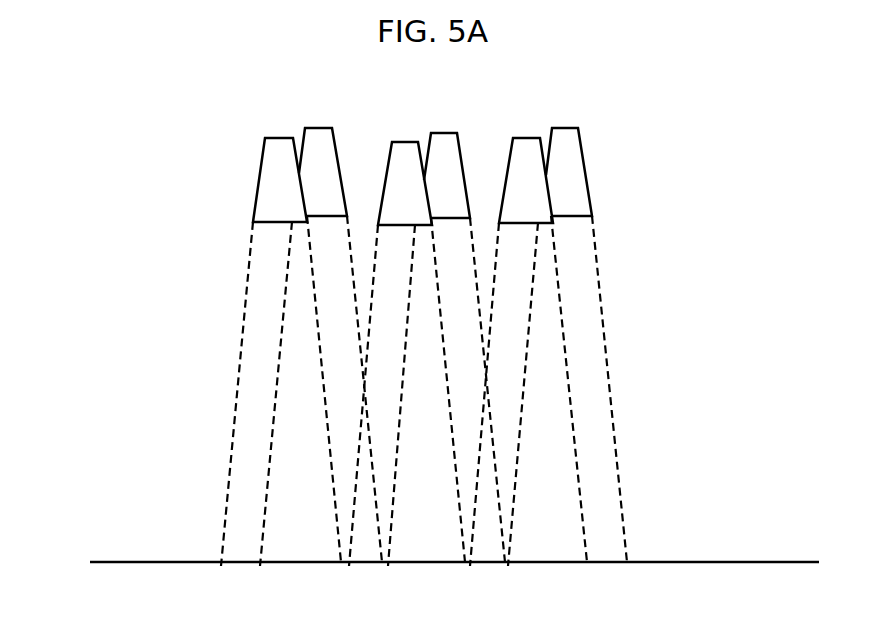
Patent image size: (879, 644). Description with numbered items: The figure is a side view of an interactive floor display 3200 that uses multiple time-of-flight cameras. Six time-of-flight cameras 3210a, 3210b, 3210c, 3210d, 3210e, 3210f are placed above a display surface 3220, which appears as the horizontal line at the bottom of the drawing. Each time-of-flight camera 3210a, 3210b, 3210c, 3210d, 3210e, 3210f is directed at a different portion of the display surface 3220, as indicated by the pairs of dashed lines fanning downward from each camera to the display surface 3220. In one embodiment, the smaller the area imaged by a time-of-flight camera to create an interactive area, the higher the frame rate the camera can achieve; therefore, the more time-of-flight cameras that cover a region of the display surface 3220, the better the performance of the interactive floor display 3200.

The interactive floor display 3200 is at (80, 103).
The time-of-flight camera 3210a is at (255, 207).
The time-of-flight camera 3210b is at (312, 137).
The time-of-flight camera 3210c is at (402, 119).
The time-of-flight camera 3210d is at (497, 116).
The time-of-flight camera 3210e is at (602, 106).
The time-of-flight camera 3210f is at (683, 162).
The display surface 3220 is at (118, 562).